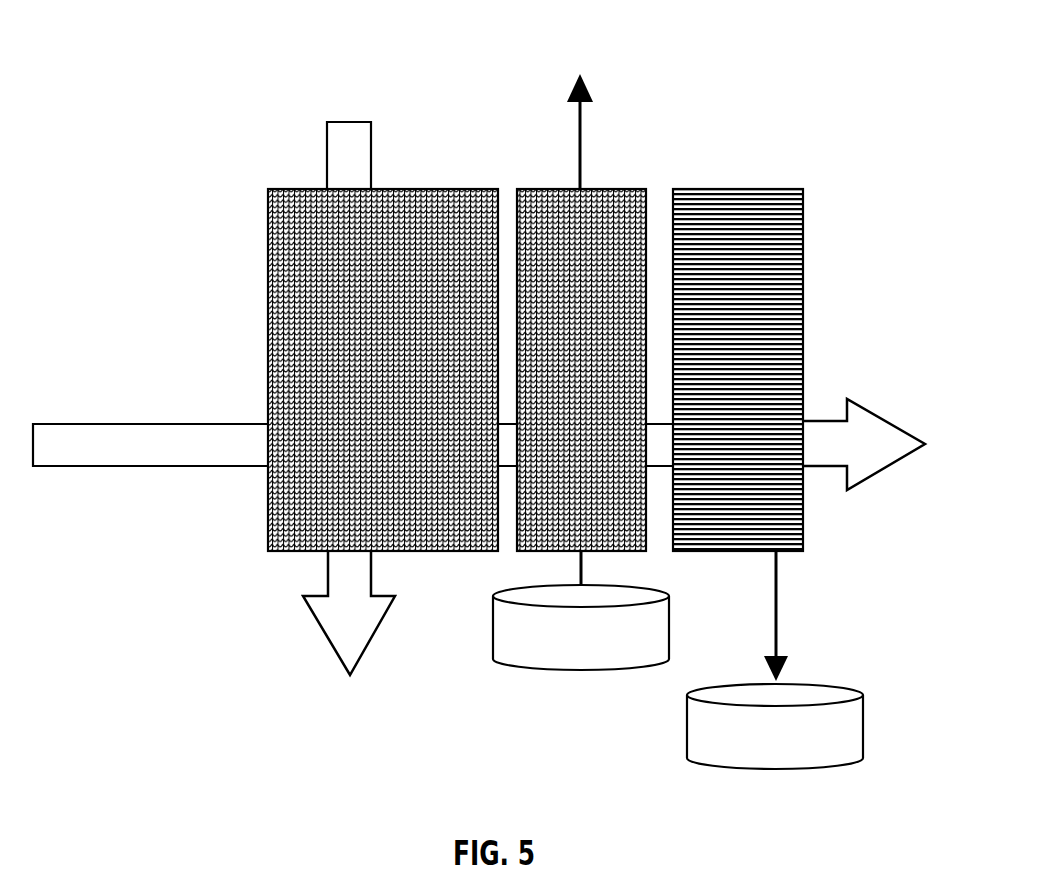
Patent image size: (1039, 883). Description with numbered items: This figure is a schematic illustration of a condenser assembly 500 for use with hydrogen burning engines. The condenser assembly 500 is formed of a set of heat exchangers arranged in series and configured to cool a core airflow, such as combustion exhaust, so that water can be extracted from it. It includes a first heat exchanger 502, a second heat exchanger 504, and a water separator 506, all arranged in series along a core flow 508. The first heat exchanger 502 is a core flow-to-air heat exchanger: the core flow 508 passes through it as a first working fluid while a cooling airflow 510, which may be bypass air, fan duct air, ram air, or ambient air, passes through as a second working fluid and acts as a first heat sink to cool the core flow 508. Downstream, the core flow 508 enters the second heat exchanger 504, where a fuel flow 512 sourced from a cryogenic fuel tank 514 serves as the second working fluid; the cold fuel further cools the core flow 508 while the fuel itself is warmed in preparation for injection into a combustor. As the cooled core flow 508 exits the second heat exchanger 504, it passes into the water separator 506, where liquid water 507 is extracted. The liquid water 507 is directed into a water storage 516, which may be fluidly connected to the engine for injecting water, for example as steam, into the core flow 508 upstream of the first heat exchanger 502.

The condenser assembly 500 is at (160, 62).
The first heat exchanger 502 is at (420, 181).
The second heat exchanger 504 is at (584, 181).
The water separator 506 is at (730, 181).
The liquid water 507 is at (769, 610).
The core flow 508 is at (145, 416).
The cooling airflow 510 is at (318, 148).
The fuel flow 512 is at (574, 122).
The cryogenic fuel tank 514 is at (662, 618).
The water storage 516 is at (856, 718).